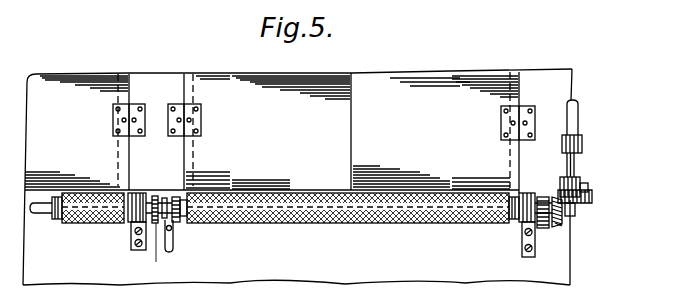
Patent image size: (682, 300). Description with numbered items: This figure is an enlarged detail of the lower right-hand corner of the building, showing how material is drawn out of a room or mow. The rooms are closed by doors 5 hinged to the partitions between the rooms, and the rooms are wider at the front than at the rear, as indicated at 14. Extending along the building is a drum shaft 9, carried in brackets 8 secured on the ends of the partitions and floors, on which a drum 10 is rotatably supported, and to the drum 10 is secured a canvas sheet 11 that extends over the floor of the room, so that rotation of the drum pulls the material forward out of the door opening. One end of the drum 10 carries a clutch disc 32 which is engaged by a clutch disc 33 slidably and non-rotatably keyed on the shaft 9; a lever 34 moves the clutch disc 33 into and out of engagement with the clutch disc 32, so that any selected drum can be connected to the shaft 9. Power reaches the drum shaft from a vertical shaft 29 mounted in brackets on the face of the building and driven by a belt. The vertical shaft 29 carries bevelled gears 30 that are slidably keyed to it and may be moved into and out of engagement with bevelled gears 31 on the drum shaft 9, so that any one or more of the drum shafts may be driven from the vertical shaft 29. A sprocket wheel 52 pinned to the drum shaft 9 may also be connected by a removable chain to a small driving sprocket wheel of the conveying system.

The doors 5 is at (67, 86).
The wider front of room 14 is at (193, 76).
The canvas sheet 11 is at (111, 222).
The drums 10 is at (57, 221).
The bracket 8 is at (134, 197).
The clutch disc 33 is at (178, 197).
The clutch disc 32 is at (184, 219).
The lever 34 is at (172, 251).
The sprocket wheels 52 is at (141, 253).
The vertical shaft 29 is at (580, 118).
The bevelled gears 30 is at (584, 200).
The shafts 9 is at (566, 216).
The bevelled gears 31 is at (555, 224).